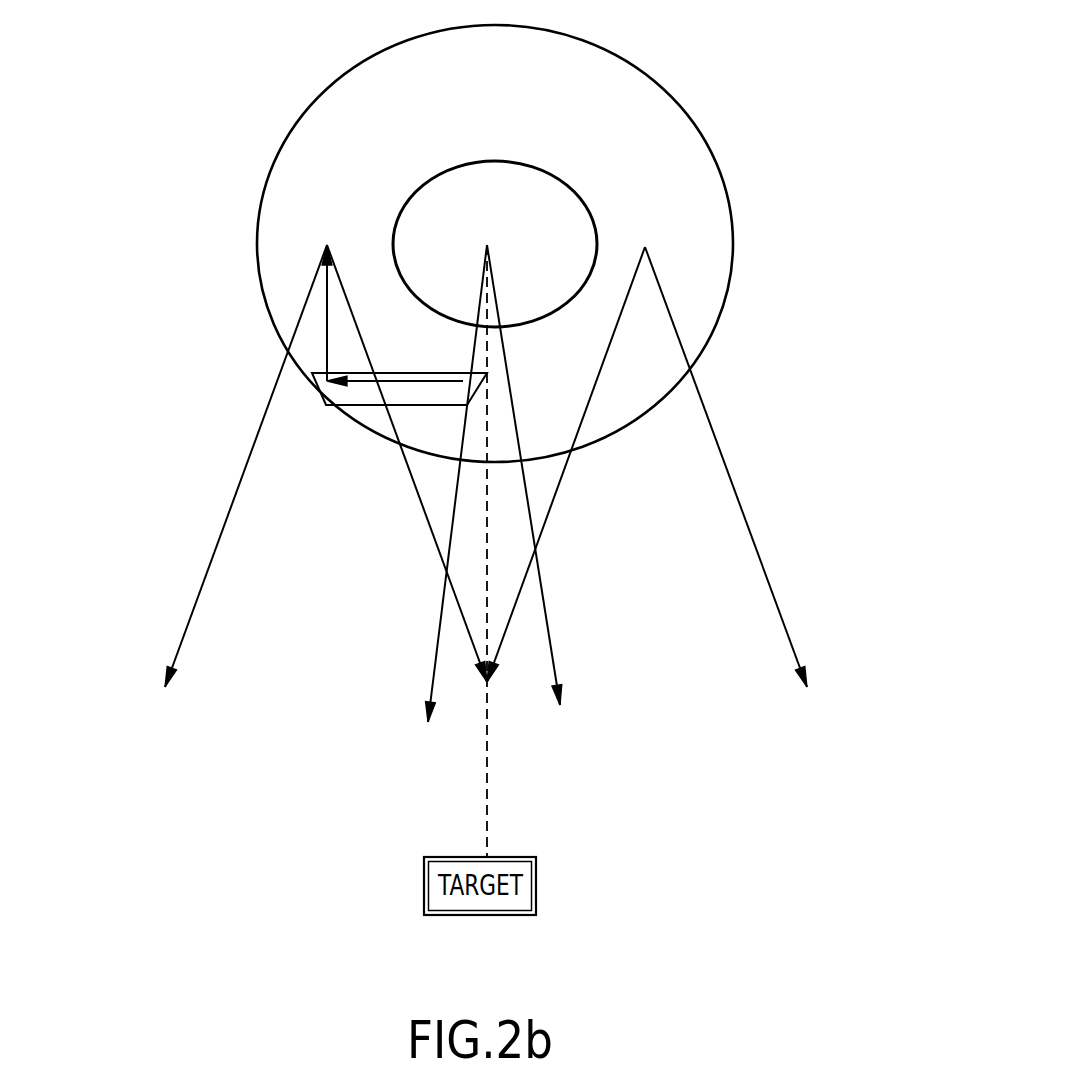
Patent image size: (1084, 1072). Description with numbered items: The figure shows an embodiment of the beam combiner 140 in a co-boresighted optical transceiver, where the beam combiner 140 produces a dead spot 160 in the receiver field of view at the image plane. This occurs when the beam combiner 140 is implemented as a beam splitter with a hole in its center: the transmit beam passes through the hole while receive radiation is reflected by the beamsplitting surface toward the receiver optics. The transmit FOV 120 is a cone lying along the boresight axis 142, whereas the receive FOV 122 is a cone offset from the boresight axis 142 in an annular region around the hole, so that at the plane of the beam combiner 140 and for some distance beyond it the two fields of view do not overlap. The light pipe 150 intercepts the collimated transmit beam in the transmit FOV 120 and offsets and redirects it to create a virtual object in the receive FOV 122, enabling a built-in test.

The beam combiner 140 is at (661, 115).
The dead spot 160 is at (565, 250).
The light pipe 150 is at (349, 398).
The receive FOV 122 is at (210, 563).
The transmit FOV 120 is at (553, 648).
The boresight axis 142 is at (487, 807).